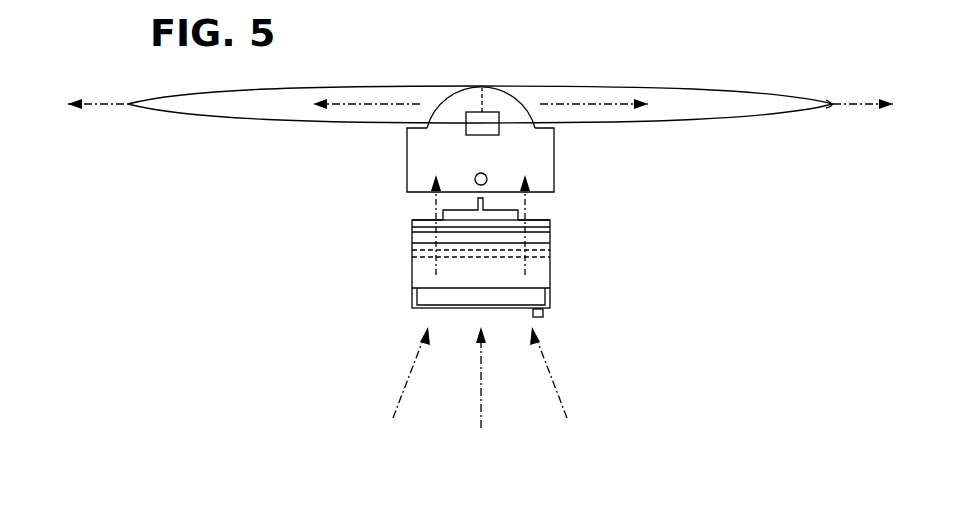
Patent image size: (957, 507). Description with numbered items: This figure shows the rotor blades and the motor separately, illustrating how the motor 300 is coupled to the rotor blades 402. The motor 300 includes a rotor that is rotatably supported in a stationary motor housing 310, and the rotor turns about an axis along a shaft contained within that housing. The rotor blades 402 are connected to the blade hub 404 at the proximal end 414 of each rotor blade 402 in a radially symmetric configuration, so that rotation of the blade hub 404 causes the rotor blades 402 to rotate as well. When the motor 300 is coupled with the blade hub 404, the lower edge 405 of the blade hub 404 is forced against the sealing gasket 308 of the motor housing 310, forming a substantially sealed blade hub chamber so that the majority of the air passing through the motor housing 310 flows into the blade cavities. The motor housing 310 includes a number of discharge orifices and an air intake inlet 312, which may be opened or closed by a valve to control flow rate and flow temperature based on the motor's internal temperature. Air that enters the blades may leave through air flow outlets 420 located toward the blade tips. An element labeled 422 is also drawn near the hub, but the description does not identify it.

The motor 300 is at (397, 288).
The sealing gasket 308 is at (543, 218).
The motor housing 310 is at (550, 270).
The air intake inlet 312 is at (545, 314).
The rotor blades 402 is at (263, 121).
The blade hub 404 is at (554, 162).
The lower edge 405 is at (413, 196).
The proximal end 414 is at (448, 97).
The air flow outlets 420 is at (833, 100).
The control unit 422 is at (490, 112).